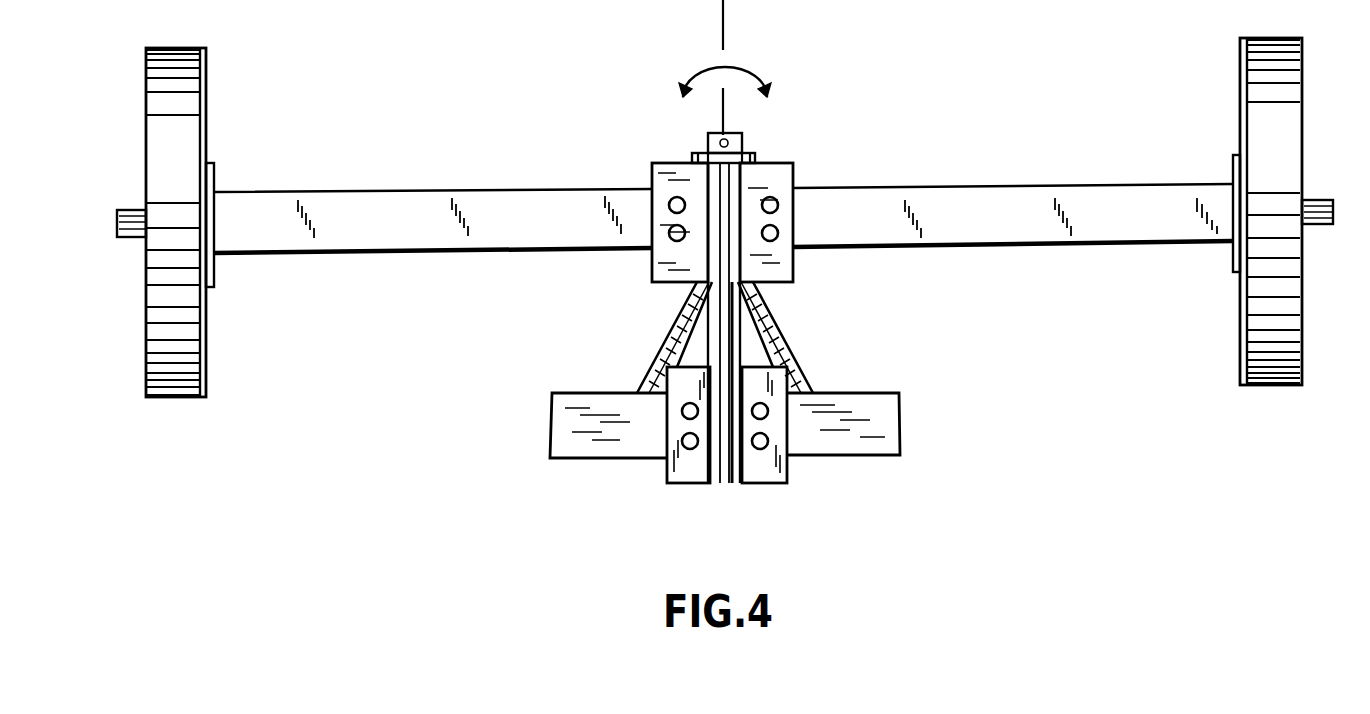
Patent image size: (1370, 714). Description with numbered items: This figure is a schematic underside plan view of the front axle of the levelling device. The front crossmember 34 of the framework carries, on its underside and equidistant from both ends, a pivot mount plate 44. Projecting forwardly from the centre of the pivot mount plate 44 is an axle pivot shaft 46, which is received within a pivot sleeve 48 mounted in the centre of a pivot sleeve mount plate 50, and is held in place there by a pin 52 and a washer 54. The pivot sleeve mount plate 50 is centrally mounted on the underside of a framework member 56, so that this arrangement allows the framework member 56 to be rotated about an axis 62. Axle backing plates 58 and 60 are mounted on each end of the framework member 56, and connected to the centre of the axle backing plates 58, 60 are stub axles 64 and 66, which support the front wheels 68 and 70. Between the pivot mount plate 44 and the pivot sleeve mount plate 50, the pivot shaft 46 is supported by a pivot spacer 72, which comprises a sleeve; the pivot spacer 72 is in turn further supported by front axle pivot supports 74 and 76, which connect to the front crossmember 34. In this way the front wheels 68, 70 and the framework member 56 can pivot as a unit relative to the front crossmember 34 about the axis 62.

The front crossmember 34 is at (893, 437).
The pivot mount plate 44 is at (699, 485).
The axle pivot shaft 46 is at (735, 485).
The pivot sleeve 48 is at (740, 183).
The pivot sleeve mount plate 50 is at (793, 266).
The pin 52 is at (708, 140).
The washer 54 is at (748, 157).
The framework member 56 is at (500, 190).
The axle backing plate 58 is at (212, 178).
The axle backing plate 60 is at (1233, 172).
The axis 62 is at (727, 42).
The stub axle 64 is at (127, 240).
The stub axle 66 is at (1313, 228).
The front wheel 68 is at (206, 84).
The front wheel 70 is at (1241, 86).
The pivot spacer 72 is at (745, 298).
The front axle pivot support 74 is at (665, 340).
The front axle pivot support 76 is at (782, 343).